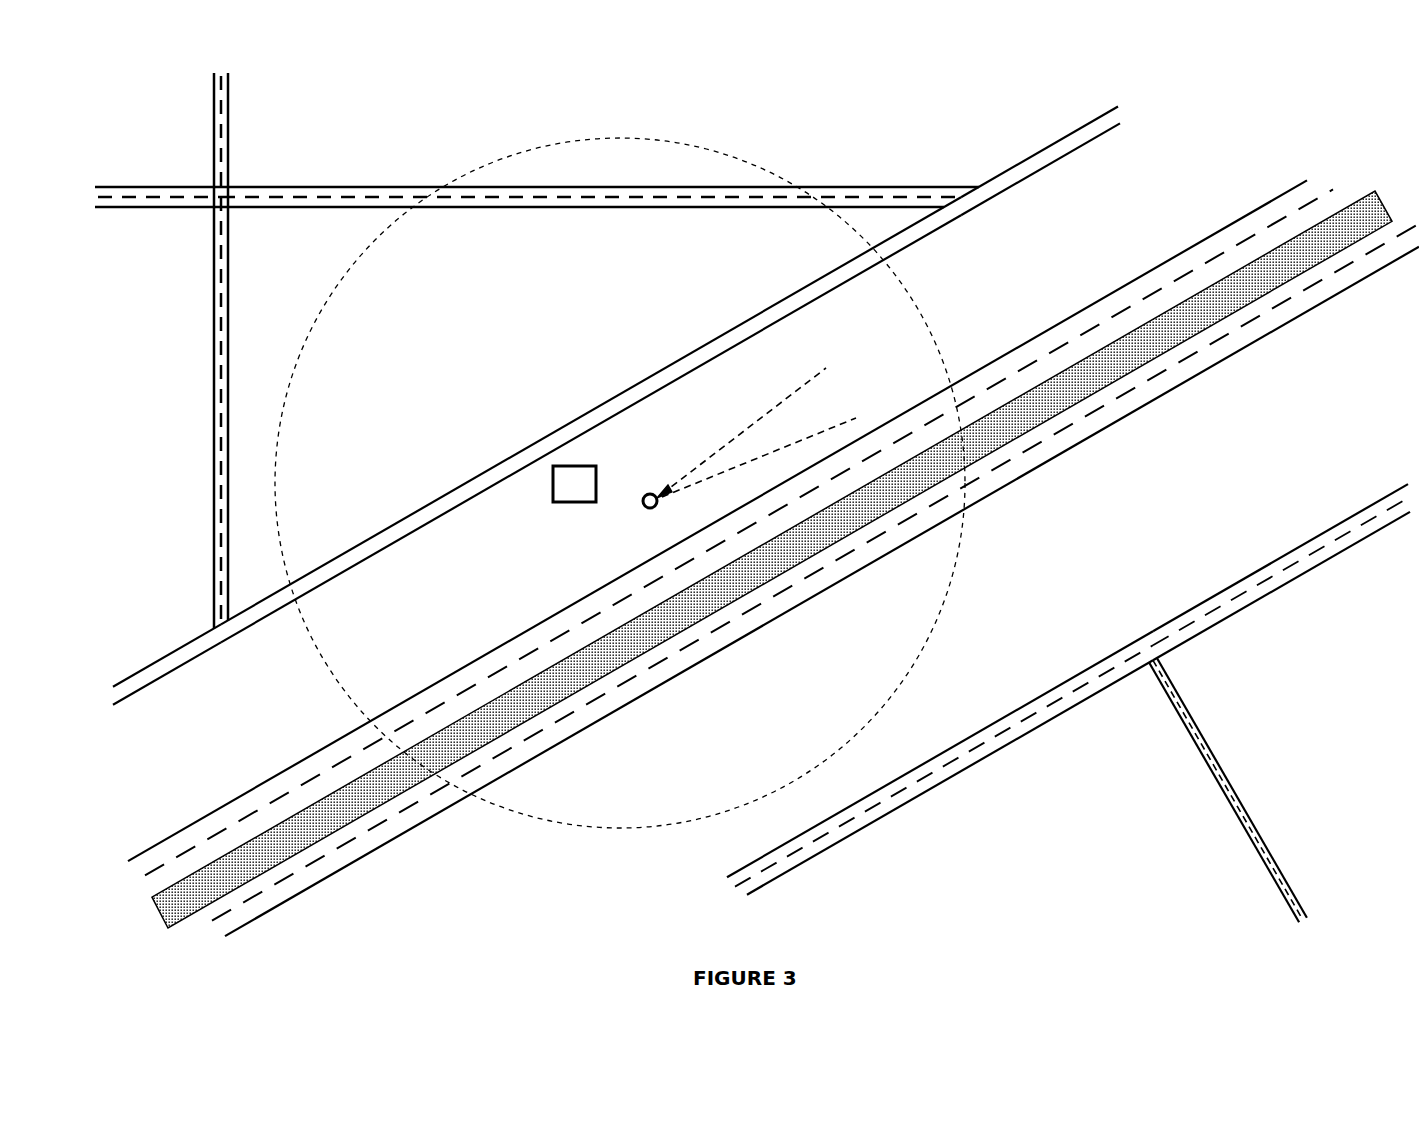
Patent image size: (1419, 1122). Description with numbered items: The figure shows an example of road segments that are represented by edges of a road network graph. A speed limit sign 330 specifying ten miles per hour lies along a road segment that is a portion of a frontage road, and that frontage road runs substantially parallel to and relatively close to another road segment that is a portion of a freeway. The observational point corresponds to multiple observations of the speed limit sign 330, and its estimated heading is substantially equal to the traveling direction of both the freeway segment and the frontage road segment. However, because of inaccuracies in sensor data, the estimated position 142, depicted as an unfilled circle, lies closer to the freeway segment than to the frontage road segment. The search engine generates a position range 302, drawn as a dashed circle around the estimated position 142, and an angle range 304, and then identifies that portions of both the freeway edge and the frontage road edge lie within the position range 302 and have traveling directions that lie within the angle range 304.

The position range 302 is at (650, 138).
The angle range 304 is at (825, 368).
The estimated position 142 is at (650, 492).
The speed limit sign 330 is at (556, 503).